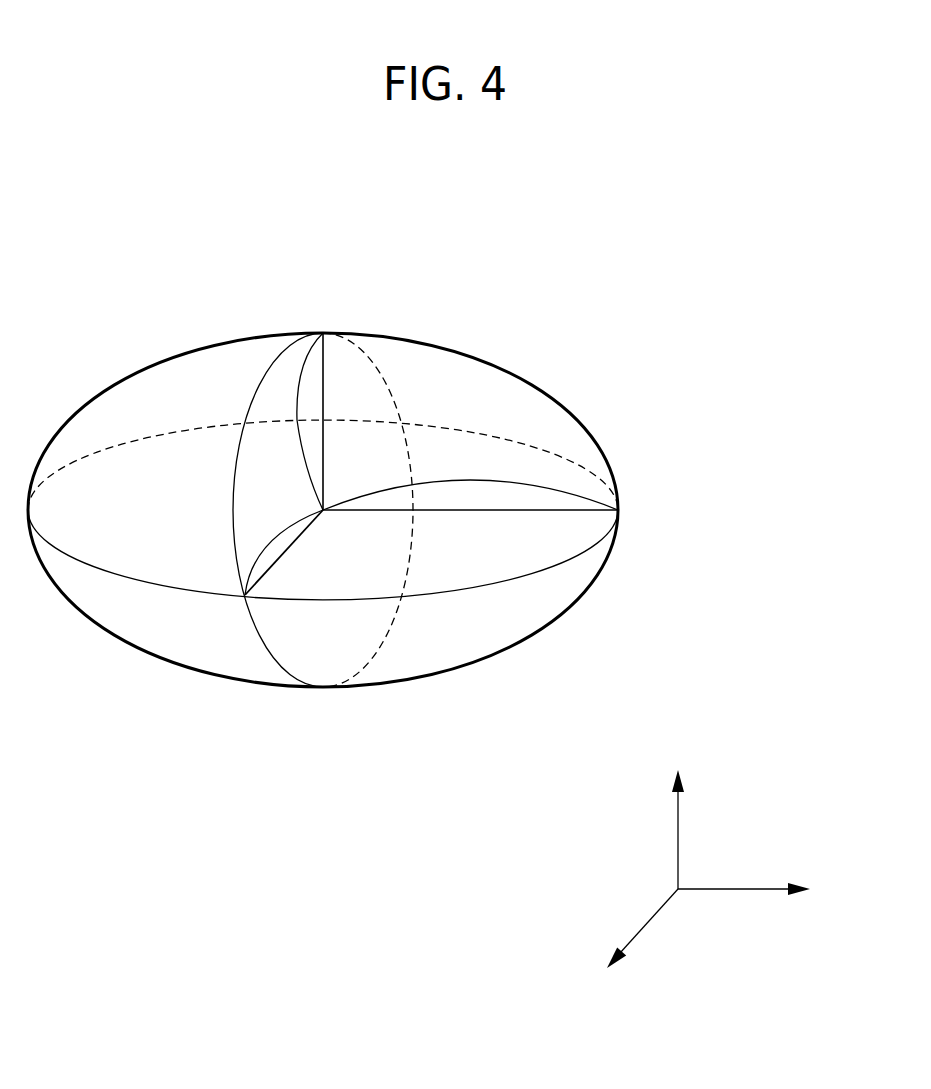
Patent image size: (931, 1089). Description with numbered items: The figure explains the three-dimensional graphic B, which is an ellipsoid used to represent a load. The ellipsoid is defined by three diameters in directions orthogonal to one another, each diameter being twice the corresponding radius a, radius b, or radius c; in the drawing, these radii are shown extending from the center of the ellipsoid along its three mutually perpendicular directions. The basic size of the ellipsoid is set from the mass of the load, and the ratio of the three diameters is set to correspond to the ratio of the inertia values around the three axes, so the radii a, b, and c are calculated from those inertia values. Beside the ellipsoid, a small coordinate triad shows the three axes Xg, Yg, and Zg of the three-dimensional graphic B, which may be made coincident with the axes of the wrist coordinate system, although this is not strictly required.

The three-dimensional graphic B is at (503, 364).
The radius a is at (470, 488).
The radius b is at (284, 552).
The radius c is at (306, 421).
The Xg axis Xg is at (762, 890).
The Yg axis Yg is at (631, 947).
The Zg axis Zg is at (679, 808).